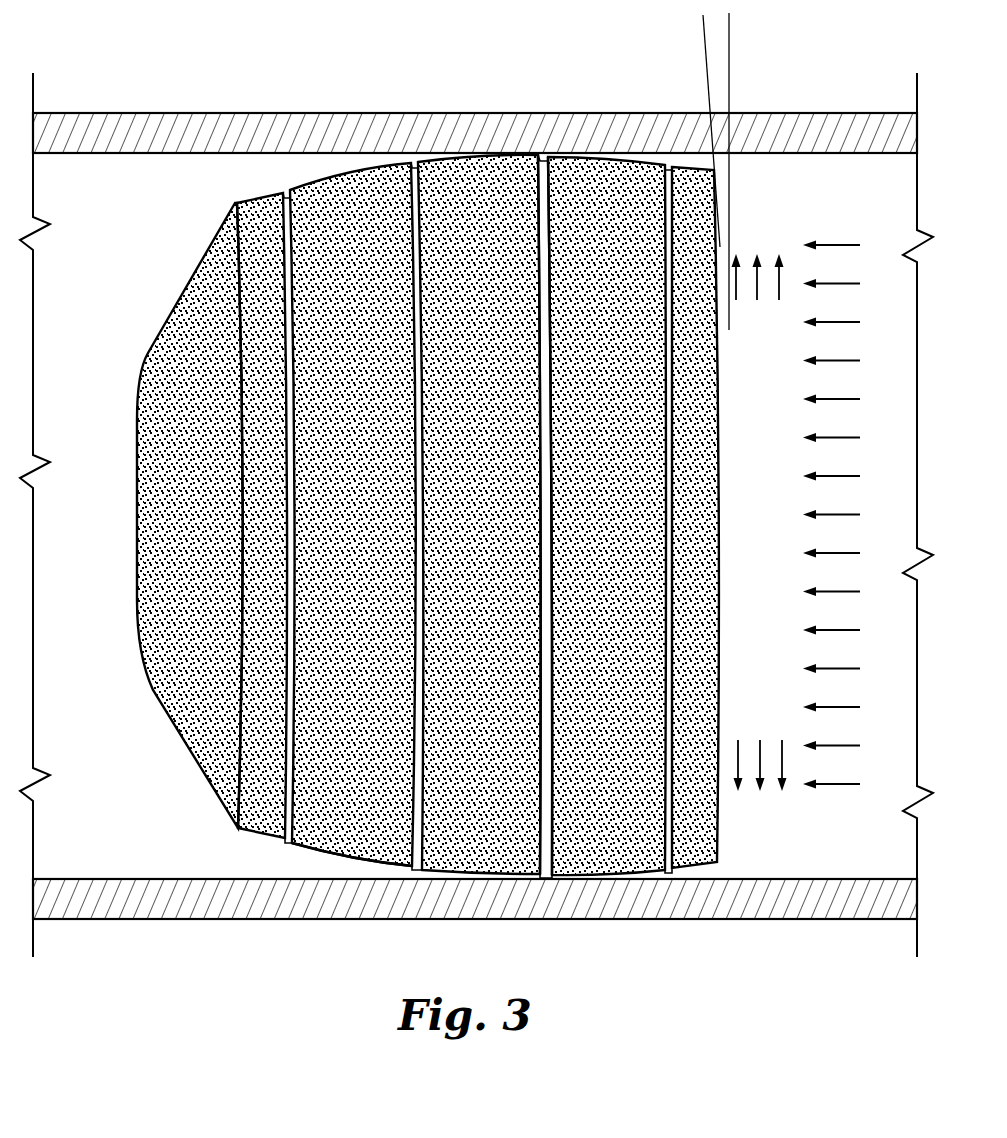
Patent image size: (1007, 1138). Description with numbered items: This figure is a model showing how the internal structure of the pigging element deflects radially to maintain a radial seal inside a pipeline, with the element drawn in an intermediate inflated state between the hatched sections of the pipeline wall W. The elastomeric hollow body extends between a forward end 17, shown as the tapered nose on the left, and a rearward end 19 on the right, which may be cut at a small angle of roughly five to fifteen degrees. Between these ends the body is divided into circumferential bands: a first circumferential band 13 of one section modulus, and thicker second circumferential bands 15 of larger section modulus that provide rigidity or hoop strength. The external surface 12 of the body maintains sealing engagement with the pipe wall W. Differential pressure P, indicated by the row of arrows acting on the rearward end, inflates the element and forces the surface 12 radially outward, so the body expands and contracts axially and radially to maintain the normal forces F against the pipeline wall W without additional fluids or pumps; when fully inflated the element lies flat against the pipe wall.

The external surface 12 is at (357, 205).
The first circumferential band 13 is at (542, 210).
The second circumferential band 15 is at (345, 815).
The forward end 17 is at (135, 565).
The rearward end 19 is at (720, 553).
The pipeline wall W is at (165, 878).
The differential pressure P is at (836, 240).
The normal forces F is at (778, 296).